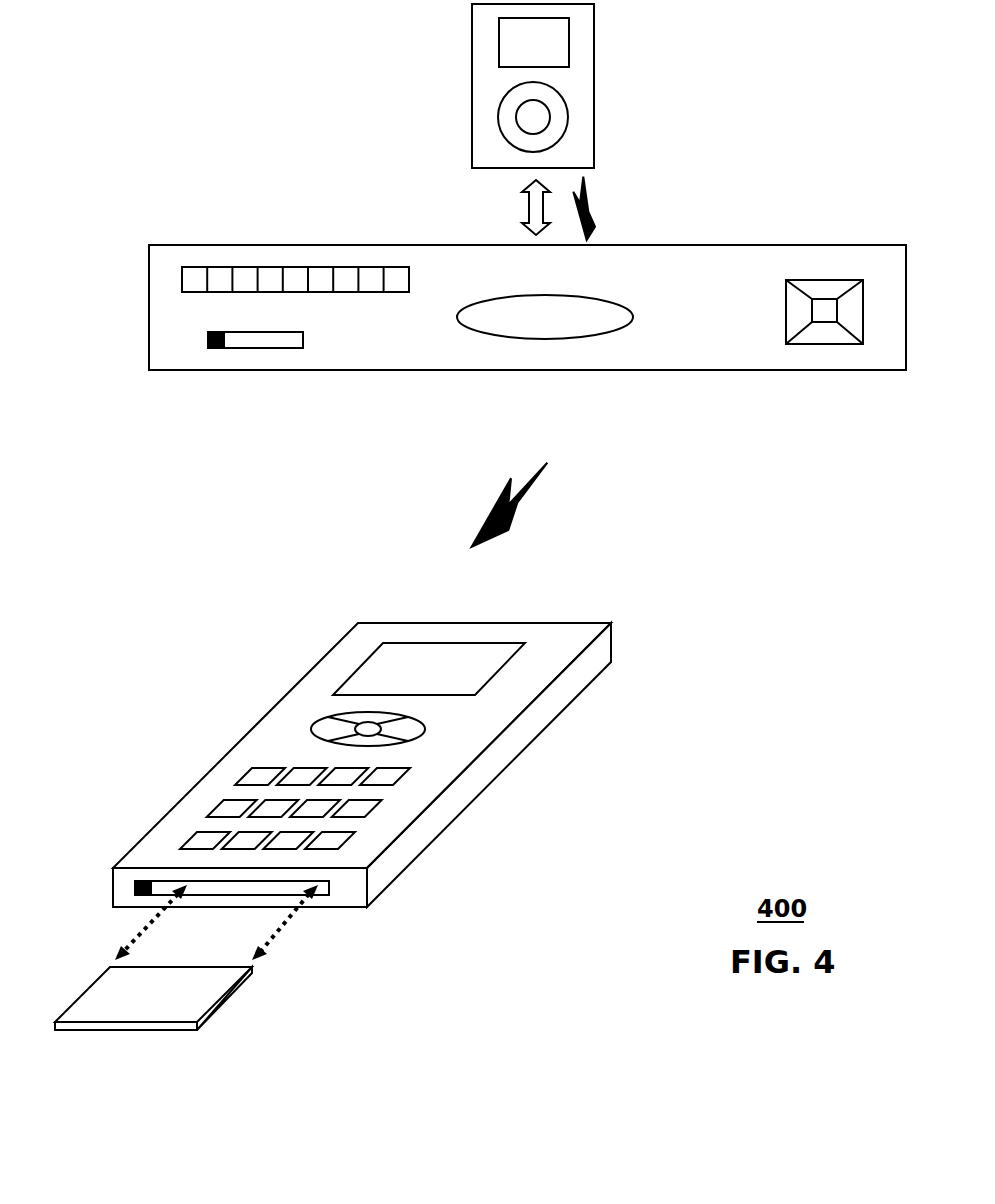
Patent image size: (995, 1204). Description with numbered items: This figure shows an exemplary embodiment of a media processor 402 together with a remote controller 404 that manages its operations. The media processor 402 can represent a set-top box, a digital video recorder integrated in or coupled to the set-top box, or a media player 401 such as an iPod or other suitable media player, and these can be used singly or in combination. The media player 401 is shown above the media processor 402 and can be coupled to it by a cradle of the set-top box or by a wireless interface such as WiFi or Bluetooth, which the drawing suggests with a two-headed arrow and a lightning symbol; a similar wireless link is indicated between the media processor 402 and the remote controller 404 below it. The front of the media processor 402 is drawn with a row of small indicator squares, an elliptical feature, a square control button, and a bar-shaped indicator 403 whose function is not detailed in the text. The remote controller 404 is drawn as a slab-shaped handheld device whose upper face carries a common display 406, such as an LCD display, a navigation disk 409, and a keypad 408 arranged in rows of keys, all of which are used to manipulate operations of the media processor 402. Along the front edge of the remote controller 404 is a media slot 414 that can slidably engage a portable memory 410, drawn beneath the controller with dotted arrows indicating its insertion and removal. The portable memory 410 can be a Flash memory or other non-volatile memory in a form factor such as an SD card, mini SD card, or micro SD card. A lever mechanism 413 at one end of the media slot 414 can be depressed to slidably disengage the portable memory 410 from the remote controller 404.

The media player 401 is at (594, 86).
The media processor 402 is at (149, 370).
The progress bar indicator 403 is at (262, 346).
The remote controller 404 is at (537, 718).
The common display 406 is at (453, 657).
The keypad 408 is at (252, 773).
The navigation disk 409 is at (318, 720).
The portable memory 410 is at (130, 1003).
The lever mechanism 413 is at (133, 888).
The media slot 414 is at (273, 888).